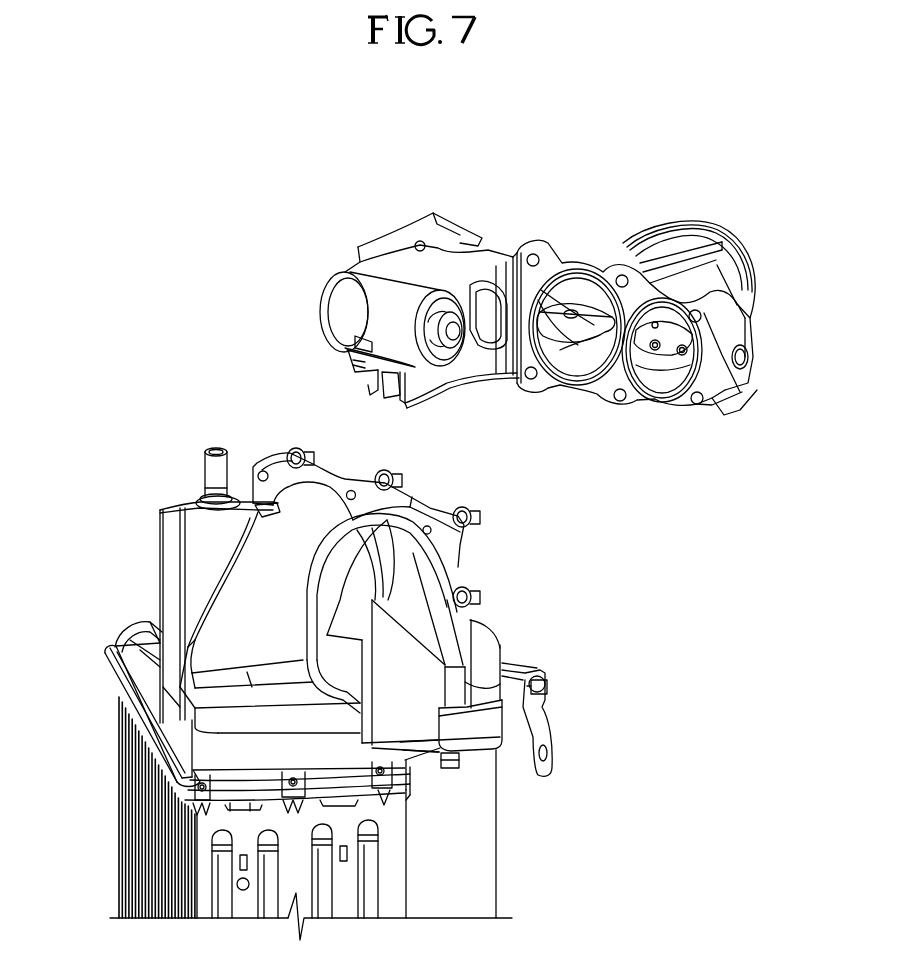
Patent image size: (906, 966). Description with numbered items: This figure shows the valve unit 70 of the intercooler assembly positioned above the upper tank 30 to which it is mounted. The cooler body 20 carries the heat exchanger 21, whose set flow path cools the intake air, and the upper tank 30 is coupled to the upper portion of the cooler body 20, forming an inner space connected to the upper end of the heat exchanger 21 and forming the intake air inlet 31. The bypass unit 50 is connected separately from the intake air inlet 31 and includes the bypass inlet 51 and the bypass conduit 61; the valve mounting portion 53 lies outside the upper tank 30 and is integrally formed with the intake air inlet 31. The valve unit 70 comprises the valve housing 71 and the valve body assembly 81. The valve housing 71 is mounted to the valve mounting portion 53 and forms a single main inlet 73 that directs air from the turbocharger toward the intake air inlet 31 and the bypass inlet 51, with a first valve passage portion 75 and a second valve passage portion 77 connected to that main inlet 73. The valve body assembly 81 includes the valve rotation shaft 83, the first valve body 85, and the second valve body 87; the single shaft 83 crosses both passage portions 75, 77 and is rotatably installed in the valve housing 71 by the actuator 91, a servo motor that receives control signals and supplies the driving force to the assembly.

The cooler body 20 is at (103, 799).
The heat exchanger 21 is at (134, 860).
The upper tank 30 is at (103, 695).
The intake air inlet 31 is at (247, 560).
The bypass unit 50 is at (488, 610).
The bypass inlet 51 is at (367, 542).
The valve mounting portion 53 is at (325, 475).
The bypass conduit 61 is at (485, 850).
The valve unit 70 is at (686, 203).
The valve housing 71 is at (585, 456).
The main inlet 73 is at (757, 283).
The first valve passage portion 75 is at (590, 372).
The second valve passage portion 77 is at (655, 375).
The valve body assembly 81 is at (642, 186).
The valve rotation shaft 83 is at (589, 318).
The first valve body 85 is at (548, 345).
The second valve body 87 is at (660, 318).
The actuator 91 is at (345, 304).